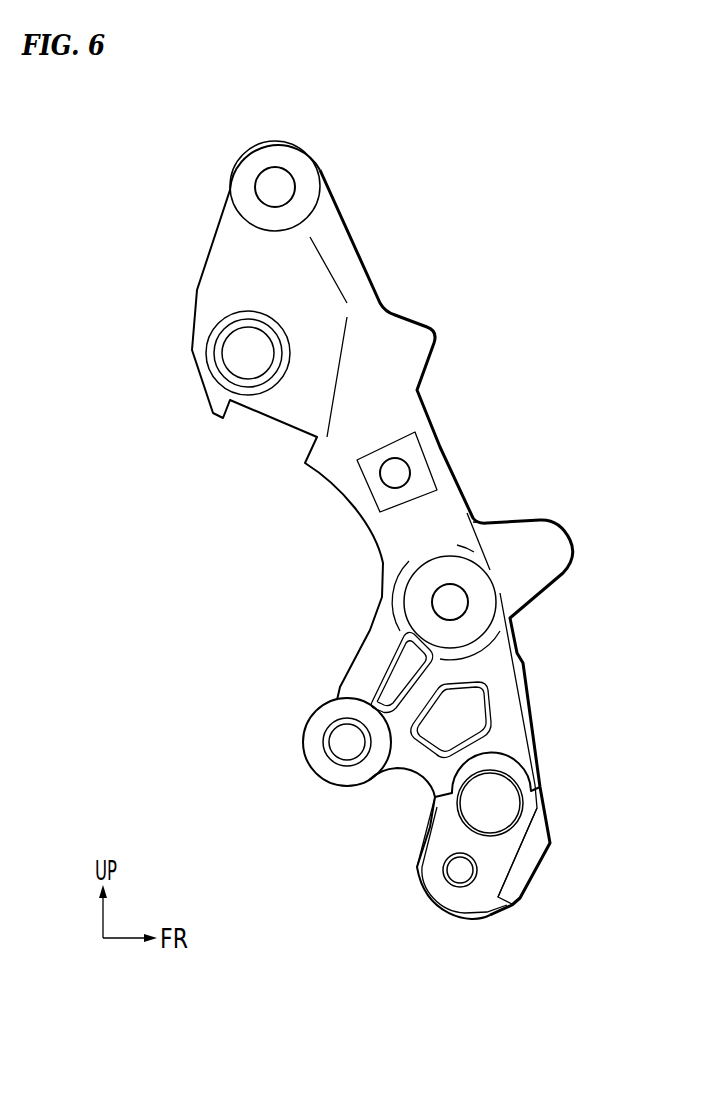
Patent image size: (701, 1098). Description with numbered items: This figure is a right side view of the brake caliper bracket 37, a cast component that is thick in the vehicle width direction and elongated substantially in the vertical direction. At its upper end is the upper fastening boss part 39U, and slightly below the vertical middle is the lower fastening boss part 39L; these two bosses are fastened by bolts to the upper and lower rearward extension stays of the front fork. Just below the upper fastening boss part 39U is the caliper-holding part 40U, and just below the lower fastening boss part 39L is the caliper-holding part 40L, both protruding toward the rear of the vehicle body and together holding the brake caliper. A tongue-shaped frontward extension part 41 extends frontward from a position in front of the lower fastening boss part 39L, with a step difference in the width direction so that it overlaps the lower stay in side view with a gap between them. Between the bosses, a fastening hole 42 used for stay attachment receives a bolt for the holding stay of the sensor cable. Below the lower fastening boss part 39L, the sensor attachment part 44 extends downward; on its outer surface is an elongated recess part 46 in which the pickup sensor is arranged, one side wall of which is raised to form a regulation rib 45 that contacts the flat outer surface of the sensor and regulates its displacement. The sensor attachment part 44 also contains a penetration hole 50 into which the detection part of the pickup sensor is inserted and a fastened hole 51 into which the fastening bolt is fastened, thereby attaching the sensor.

The brake caliper bracket 37 is at (415, 232).
The upper fastening boss part 39U is at (292, 157).
The lower fastening boss part 39L is at (477, 622).
The upper caliper-holding part 40U is at (213, 332).
The lower caliper-holding part 40L is at (313, 738).
The frontward extension part 41 is at (543, 537).
The fastening hole used for stay attachment 42 is at (398, 475).
The sensor attachment part 44 is at (420, 850).
The regulation rib 45 is at (523, 865).
The recess part 46 is at (470, 907).
The penetration hole 50 is at (510, 797).
The fastened hole 51 is at (455, 880).